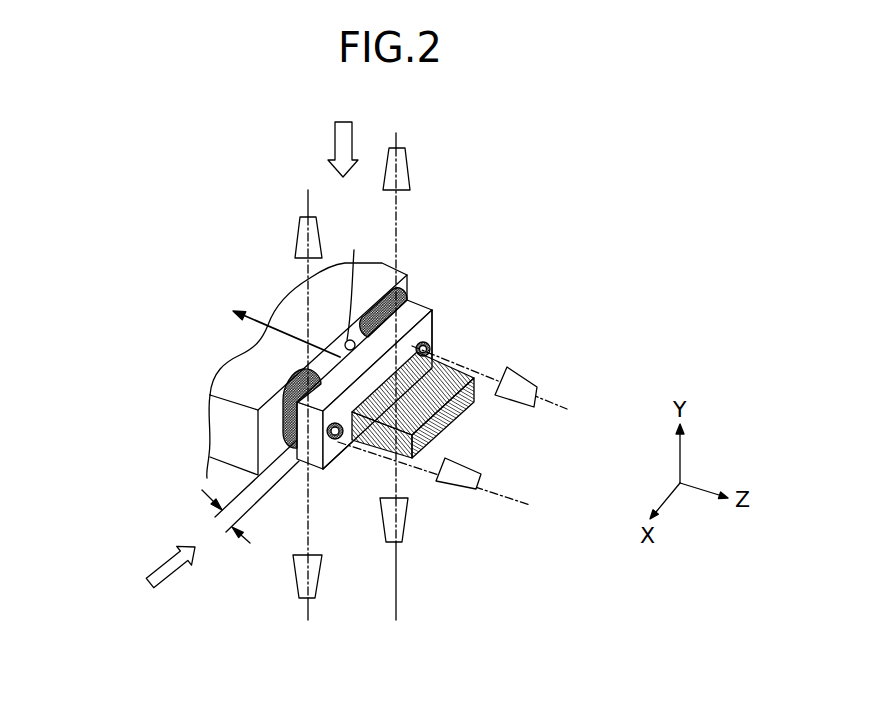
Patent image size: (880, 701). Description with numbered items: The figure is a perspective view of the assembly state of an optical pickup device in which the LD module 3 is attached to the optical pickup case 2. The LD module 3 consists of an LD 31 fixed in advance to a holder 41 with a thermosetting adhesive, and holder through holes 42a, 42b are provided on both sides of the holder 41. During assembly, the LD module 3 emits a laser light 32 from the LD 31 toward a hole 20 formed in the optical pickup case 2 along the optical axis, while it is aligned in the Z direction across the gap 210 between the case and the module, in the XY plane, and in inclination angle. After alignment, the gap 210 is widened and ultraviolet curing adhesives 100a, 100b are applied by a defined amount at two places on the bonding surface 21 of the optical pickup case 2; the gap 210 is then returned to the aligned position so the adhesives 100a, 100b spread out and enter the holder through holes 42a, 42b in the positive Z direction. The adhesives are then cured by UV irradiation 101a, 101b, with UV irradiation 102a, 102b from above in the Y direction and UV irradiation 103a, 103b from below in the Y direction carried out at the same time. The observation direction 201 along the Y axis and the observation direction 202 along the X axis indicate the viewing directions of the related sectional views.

The optical pickup case 2 is at (238, 378).
The hole 20 is at (354, 286).
The bonding surface 21 is at (268, 450).
The gap 210 is at (215, 518).
The LD module 3 is at (383, 375).
The LD 31 is at (438, 370).
The holder 41 is at (410, 317).
The holder through hole 42a is at (432, 343).
The holder through hole 42b is at (335, 440).
The ultraviolet curing adhesive 100a is at (413, 287).
The ultraviolet curing adhesive 100b is at (290, 417).
The laser light 32 is at (267, 325).
The UV irradiation 101a is at (542, 383).
The UV irradiation 101b is at (482, 470).
The UV irradiation 102a is at (407, 170).
The UV irradiation 102b is at (296, 235).
The UV irradiation 103a is at (406, 532).
The UV irradiation 103b is at (296, 590).
The observation direction 201 is at (332, 134).
The observation direction 202 is at (150, 567).